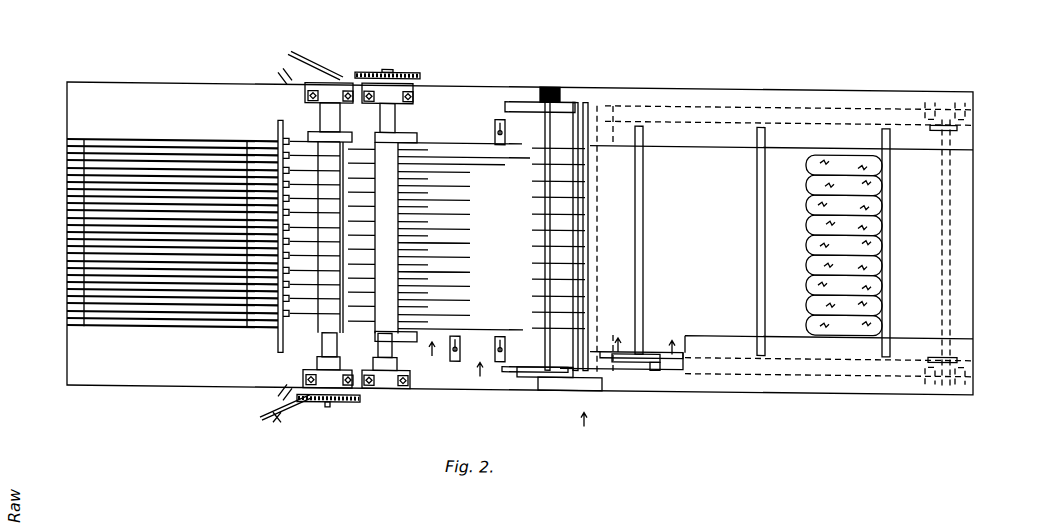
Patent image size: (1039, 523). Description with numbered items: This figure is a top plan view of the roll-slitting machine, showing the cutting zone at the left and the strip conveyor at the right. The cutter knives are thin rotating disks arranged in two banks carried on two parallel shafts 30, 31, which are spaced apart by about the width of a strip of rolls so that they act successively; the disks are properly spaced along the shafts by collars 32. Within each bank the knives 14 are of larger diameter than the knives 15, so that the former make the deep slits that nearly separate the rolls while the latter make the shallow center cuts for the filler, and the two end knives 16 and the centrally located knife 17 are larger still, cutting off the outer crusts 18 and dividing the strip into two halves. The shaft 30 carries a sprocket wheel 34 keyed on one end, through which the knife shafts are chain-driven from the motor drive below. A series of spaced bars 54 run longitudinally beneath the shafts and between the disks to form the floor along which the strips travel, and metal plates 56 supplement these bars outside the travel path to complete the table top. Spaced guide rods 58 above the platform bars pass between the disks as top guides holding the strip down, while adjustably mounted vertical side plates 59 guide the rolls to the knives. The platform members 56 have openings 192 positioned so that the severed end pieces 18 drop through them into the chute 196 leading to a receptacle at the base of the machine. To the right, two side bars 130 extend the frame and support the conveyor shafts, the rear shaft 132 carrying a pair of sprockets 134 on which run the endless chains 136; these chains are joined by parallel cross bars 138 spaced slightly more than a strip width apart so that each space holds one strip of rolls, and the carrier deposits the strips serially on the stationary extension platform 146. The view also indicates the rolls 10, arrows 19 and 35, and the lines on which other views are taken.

The bale 10 is at (805, 253).
The knives 14 is at (456, 270).
The knives 15 is at (306, 338).
The end knives 16 is at (427, 144).
The centrally located knife 17 is at (456, 240).
The outer crusts 18 is at (268, 50).
The direction arrow 19 is at (594, 415).
The shaft 30 is at (320, 124).
The shaft 31 is at (413, 92).
The collars 32 is at (392, 336).
The sprocket wheel 34 is at (340, 400).
The upper rack bar 35 is at (400, 69).
The spaced bars 54 is at (121, 158).
The metal plates 56 is at (187, 120).
The guide rods 58 is at (462, 294).
The vertical side plates 59 is at (477, 140).
The side bars 130 is at (645, 383).
The shaft 132 is at (950, 271).
The sprockets 134 is at (957, 119).
The endless chain 136 is at (708, 120).
The cross bars 138 is at (643, 226).
The extension platform 146 is at (532, 207).
The openings 192 is at (345, 78).
The chute 196 is at (282, 72).